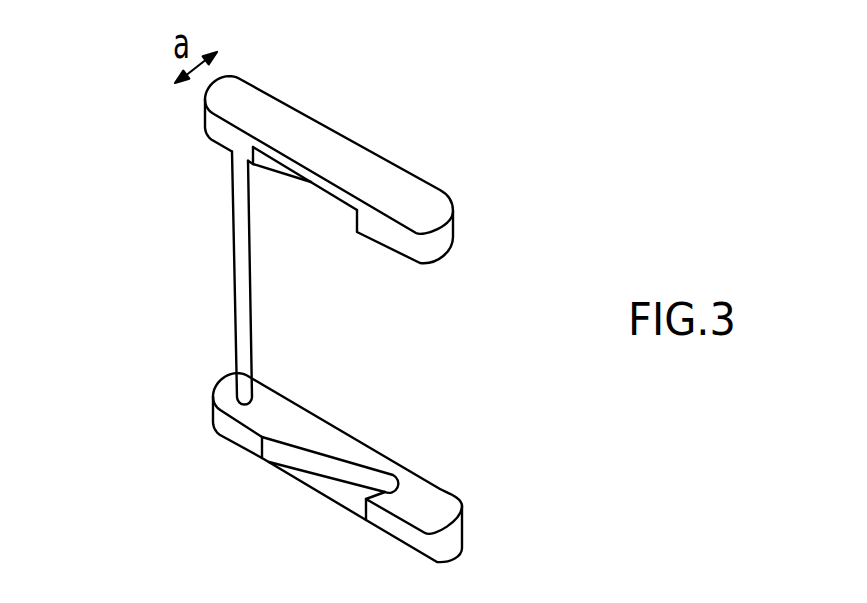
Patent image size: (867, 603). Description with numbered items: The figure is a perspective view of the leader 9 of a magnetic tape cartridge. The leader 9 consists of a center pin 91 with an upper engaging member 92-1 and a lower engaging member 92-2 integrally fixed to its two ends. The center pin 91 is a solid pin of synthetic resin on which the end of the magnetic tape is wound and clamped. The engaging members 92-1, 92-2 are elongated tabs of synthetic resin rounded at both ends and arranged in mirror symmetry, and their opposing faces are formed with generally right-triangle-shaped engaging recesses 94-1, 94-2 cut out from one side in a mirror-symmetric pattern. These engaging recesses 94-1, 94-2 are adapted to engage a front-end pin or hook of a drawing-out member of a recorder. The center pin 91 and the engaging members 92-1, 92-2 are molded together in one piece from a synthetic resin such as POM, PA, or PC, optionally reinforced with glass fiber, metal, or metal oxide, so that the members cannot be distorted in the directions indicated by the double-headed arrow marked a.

The leader 9 is at (117, 313).
The center pin 91 is at (233, 295).
The upper engaging member 92-1 is at (383, 183).
The lower engaging member 92-2 is at (437, 488).
The engaging recess 94-1 is at (322, 195).
The engaging recess 94-2 is at (331, 491).